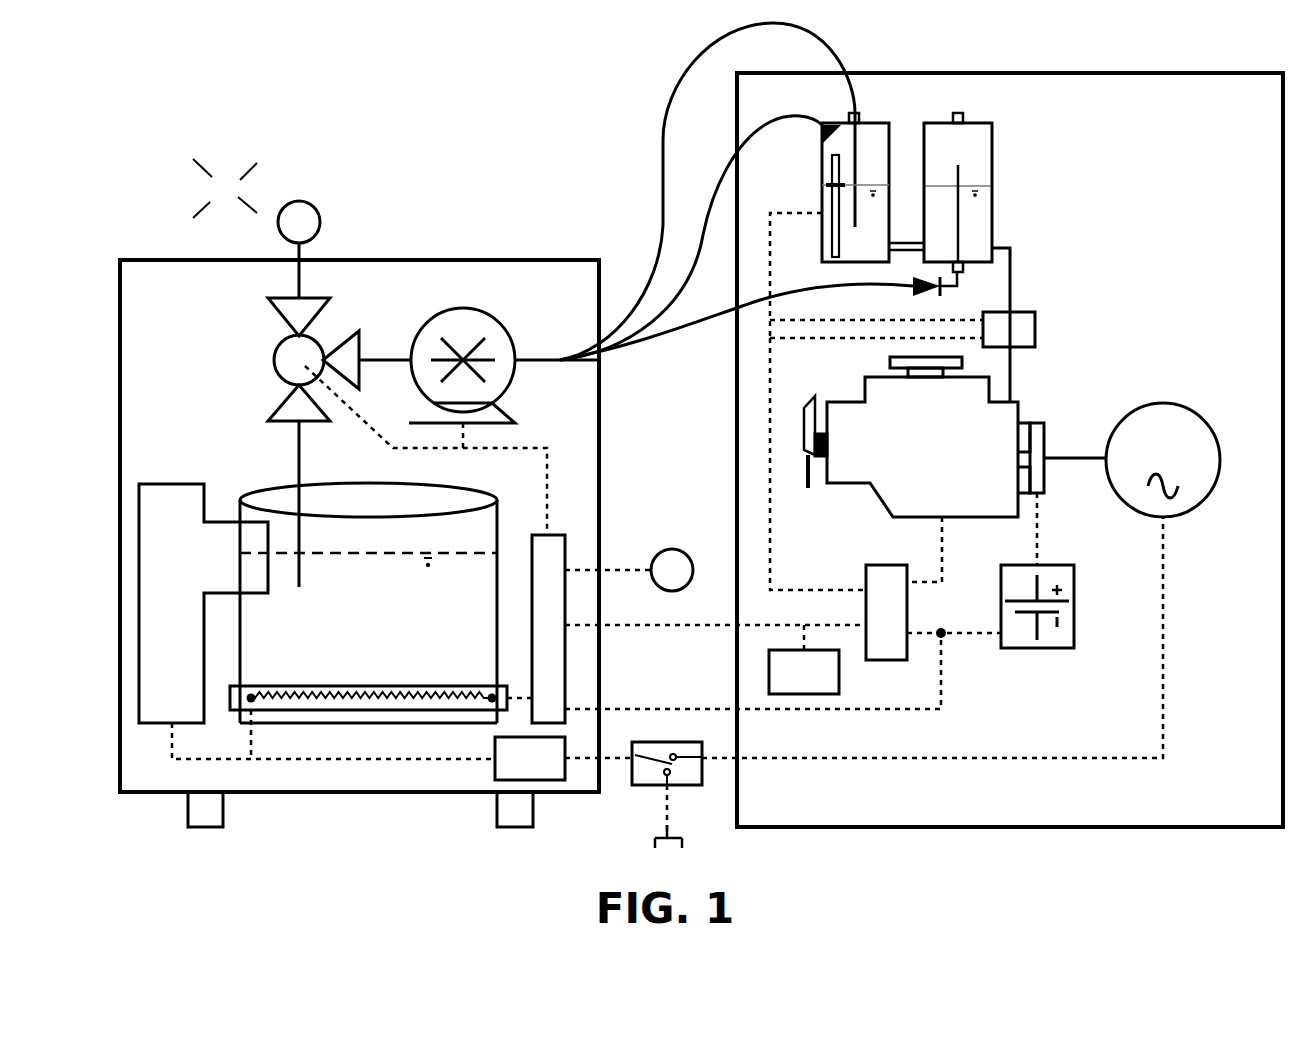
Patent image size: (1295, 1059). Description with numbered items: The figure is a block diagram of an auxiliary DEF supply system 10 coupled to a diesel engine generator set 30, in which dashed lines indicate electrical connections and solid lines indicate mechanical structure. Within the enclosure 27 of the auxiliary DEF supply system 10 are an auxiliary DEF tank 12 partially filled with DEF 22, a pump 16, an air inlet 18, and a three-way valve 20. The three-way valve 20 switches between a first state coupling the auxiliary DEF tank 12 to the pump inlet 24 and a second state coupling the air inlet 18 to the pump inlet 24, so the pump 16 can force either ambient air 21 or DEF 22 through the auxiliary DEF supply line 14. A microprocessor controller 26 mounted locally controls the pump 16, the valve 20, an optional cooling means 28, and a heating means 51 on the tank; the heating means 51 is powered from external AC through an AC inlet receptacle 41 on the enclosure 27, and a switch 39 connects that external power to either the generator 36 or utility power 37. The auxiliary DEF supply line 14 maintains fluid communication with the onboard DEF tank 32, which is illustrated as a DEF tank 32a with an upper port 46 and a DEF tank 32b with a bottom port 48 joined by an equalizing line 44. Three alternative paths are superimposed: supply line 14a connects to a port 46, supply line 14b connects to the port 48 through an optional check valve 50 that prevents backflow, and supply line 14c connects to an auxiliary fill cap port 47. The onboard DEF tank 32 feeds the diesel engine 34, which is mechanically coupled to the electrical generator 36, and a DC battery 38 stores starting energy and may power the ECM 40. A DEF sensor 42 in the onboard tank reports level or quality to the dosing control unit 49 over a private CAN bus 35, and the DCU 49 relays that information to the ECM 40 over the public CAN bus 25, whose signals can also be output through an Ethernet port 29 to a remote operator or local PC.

The auxiliary DEF supply system 10 is at (349, 154).
The auxiliary DEF tank 12 is at (282, 486).
The auxiliary DEF supply line 14 is at (535, 360).
The supply line 14a is at (665, 140).
The supply line 14b is at (690, 335).
The supply line 14c is at (716, 190).
The pump 16 is at (427, 325).
The air inlet 18 is at (320, 224).
The three-way valve 20 is at (275, 353).
The ambient air 21 is at (225, 188).
The DEF 22 is at (368, 640).
The pump inlet 24 is at (400, 362).
The public CAN bus 25 is at (690, 627).
The microprocessor controller 26 is at (565, 540).
The enclosure 27 is at (480, 260).
The cooling means 28 is at (165, 484).
The Ethernet port 29 is at (672, 549).
The diesel engine generator set 30 is at (998, 25).
The onboard DEF tank 32 is at (795, 161).
The DEF tank 32a is at (875, 123).
The DEF tank 32b is at (992, 140).
The diesel engine 34 is at (845, 400).
The private CAN bus 35 is at (770, 222).
The electrical generator 36 is at (1163, 403).
The utility power 37 is at (655, 840).
The DC battery 38 is at (1060, 565).
The switch 39 is at (652, 785).
The ECM 40 is at (875, 565).
The AC inlet receptacle 41 is at (495, 752).
The DEF sensor 42 is at (845, 240).
The equalizing line 44 is at (896, 243).
The upper port 46 is at (849, 116).
The auxiliary fill cap port 47 is at (816, 131).
The port 48 is at (963, 272).
The dosing control unit 49 is at (1035, 325).
The check valve 50 is at (912, 292).
The heating means 51 is at (286, 686).